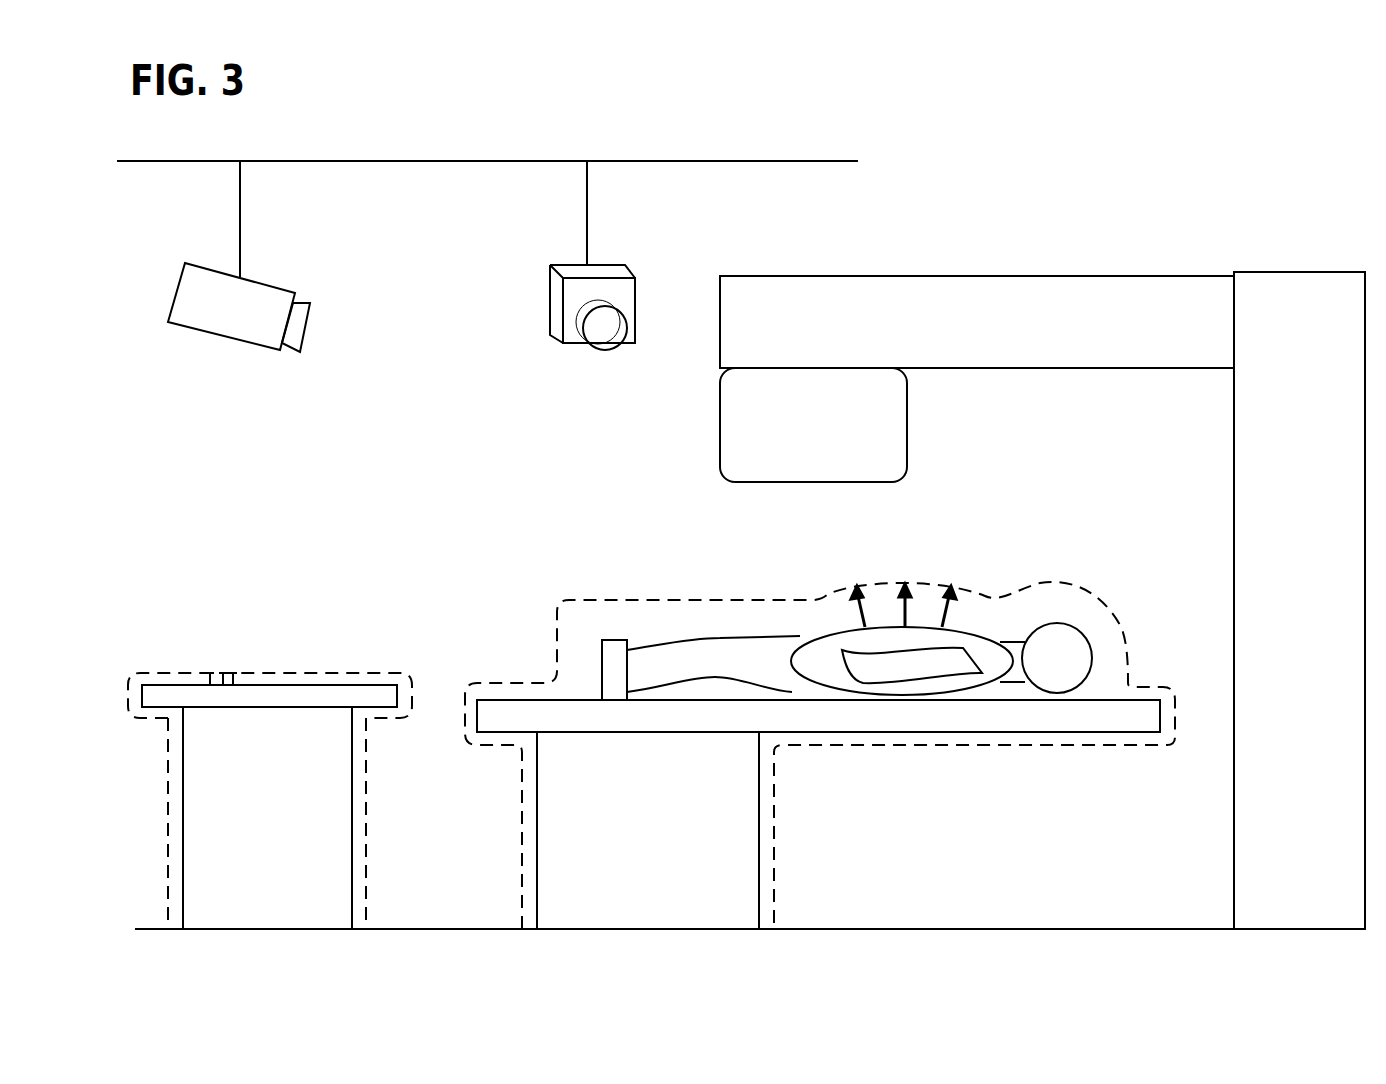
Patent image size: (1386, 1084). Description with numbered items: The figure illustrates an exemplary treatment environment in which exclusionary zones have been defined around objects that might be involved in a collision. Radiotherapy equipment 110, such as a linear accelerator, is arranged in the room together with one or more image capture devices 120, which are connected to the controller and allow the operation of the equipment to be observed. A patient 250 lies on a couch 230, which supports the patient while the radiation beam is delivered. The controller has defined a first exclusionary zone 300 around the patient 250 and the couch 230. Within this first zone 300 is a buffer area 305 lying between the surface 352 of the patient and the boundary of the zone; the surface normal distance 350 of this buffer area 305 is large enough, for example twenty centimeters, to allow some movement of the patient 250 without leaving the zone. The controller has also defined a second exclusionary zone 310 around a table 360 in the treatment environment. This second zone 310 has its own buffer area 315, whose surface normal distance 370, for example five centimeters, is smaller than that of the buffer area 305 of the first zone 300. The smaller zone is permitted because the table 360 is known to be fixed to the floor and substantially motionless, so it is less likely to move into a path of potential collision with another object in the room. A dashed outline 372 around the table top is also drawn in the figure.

The radiotherapy equipment 110 is at (1096, 225).
The image capture device 120 is at (253, 347).
The couch 230 is at (713, 805).
The patient 250 is at (662, 662).
The first exclusionary zone 300 is at (725, 598).
The buffer area 305 is at (1055, 608).
The second exclusionary zone 310 is at (200, 673).
The buffer area 315 is at (360, 717).
The surface normal distance 350 is at (902, 608).
The surface of the patient 352 is at (977, 635).
The table 360 is at (292, 753).
The surface normal distance 370 is at (223, 685).
The phantom outline 372 is at (345, 683).